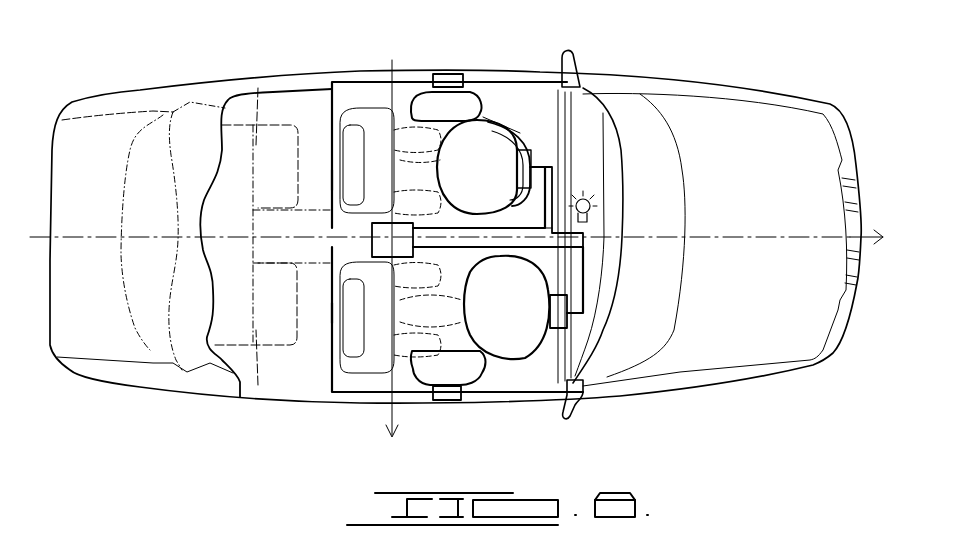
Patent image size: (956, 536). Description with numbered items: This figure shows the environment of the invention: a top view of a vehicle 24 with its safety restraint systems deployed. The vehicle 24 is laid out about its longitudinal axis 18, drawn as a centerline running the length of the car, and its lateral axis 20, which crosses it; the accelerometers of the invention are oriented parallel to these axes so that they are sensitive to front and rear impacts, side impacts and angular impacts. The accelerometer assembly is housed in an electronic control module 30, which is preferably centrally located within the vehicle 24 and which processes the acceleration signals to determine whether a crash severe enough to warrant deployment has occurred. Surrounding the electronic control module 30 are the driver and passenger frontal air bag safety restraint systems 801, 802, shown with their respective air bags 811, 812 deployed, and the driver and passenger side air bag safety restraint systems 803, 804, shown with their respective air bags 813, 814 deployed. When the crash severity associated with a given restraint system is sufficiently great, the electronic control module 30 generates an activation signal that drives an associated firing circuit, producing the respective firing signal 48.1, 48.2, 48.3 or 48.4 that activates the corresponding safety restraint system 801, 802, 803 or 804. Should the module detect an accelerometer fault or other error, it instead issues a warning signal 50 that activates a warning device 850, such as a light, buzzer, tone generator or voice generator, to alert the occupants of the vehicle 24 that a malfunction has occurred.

The longitudinal axis 18 is at (813, 232).
The lateral axis 20 is at (388, 420).
The vehicle 24 is at (773, 376).
The electronic control module 30 is at (382, 223).
The firing signal 48.1 is at (549, 174).
The firing signal 48.2 is at (583, 268).
The firing signal 48.3 is at (332, 180).
The firing signal 48.4 is at (332, 313).
The warning signal 50 is at (583, 233).
The driver frontal air bag safety restraint system 801 is at (538, 152).
The passenger frontal air bag safety restraint system 802 is at (573, 327).
The driver side air bag safety restraint system 803 is at (452, 73).
The passenger side air bag safety restraint system 804 is at (445, 400).
The air bag 811 is at (450, 180).
The air bag 812 is at (525, 360).
The air bag 813 is at (414, 100).
The air bag 814 is at (442, 351).
The warning device 850 is at (592, 201).